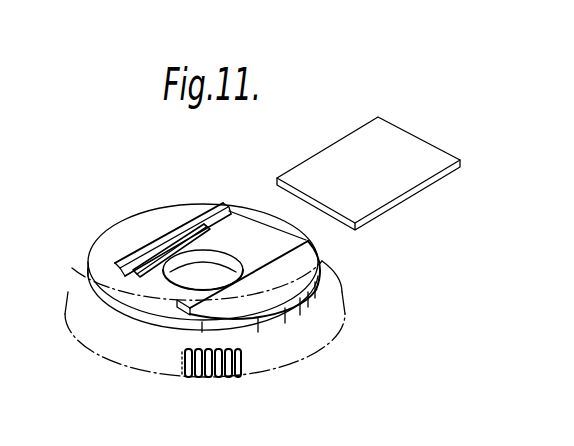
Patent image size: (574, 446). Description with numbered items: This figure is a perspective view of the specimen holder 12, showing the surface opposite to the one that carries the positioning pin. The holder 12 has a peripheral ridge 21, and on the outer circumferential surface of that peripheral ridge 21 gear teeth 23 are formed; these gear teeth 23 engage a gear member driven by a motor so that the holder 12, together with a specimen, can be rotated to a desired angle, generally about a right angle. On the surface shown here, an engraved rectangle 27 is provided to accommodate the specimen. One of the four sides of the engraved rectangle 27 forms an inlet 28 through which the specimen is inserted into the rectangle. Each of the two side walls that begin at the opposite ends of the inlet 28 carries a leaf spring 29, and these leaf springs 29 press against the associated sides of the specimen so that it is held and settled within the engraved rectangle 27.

The holder 12 is at (350, 302).
The peripheral ridge 21 is at (337, 269).
The gear teeth 23 is at (198, 380).
The engraved rectangle 27 is at (231, 222).
The inlet 28 is at (280, 215).
The leaf spring 29 is at (177, 245).